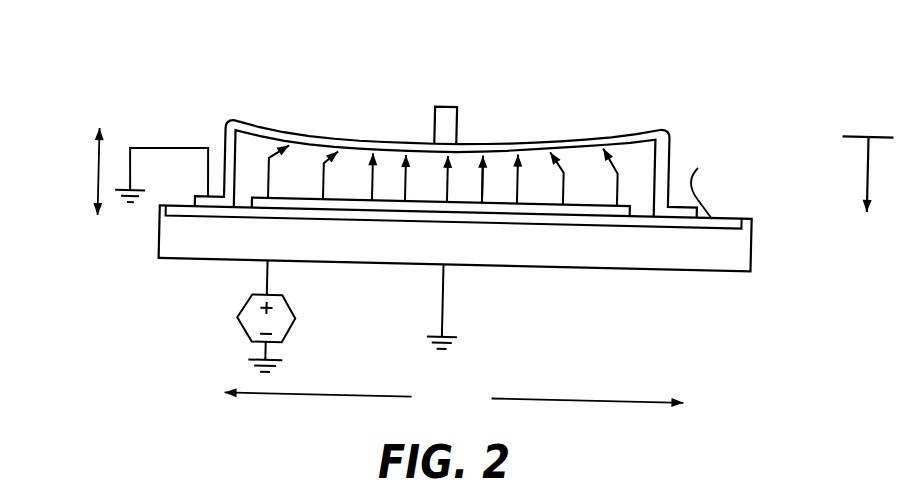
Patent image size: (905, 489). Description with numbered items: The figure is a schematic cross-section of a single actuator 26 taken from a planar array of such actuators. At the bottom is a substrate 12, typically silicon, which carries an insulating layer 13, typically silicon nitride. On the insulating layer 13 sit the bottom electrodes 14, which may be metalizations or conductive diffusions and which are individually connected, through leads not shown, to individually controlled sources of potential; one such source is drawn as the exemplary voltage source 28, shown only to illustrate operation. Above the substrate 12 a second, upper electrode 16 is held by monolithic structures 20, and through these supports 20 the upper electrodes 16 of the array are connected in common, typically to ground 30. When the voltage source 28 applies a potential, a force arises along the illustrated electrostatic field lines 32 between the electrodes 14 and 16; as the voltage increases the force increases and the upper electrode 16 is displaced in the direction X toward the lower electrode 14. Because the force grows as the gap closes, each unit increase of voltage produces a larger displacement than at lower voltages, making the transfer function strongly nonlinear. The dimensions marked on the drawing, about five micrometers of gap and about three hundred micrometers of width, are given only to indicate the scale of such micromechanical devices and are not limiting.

The substrate 12 is at (615, 258).
The insulating layer 13 is at (517, 256).
The electrodes 14 is at (612, 212).
The second electrodes 16 is at (583, 138).
The monolithic structures 20 is at (443, 107).
The actuator 26 is at (150, 275).
The voltage source 28 is at (295, 318).
The ground 30 is at (128, 147).
The electrostatic field lines 32 is at (483, 185).